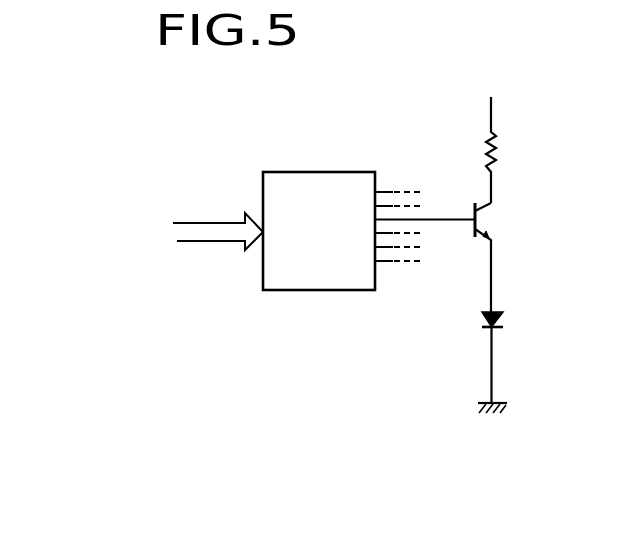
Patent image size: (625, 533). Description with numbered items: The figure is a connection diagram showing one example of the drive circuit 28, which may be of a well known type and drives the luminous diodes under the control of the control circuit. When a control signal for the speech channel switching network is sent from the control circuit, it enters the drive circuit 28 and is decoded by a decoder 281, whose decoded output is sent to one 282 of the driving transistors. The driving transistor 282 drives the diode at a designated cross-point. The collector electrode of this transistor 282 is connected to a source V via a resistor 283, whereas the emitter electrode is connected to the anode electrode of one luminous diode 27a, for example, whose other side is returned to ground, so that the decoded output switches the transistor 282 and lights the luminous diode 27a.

The drive circuit 28 is at (258, 242).
The decoder 281 is at (333, 172).
The driving transistor 282 is at (501, 257).
The resistor 283 is at (502, 137).
The luminous diode 27a is at (507, 353).